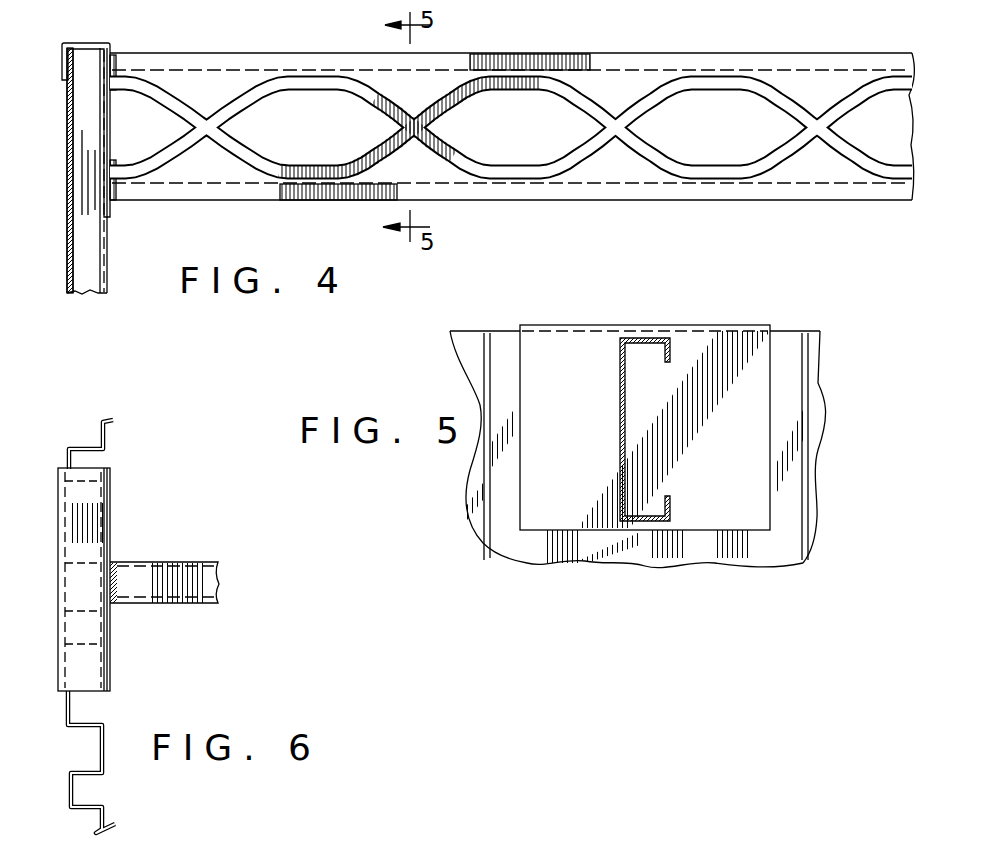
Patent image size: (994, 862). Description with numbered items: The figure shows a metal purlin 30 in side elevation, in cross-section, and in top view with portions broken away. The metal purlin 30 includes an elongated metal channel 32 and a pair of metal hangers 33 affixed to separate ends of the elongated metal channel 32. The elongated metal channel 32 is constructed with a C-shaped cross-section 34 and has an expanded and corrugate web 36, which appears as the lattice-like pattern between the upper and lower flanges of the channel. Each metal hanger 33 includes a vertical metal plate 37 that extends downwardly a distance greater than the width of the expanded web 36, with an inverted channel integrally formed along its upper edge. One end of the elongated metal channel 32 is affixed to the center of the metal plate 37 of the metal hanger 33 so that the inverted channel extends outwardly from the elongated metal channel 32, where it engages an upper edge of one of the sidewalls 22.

In FIG. 4, the sidewall 22 is at (67, 172).
In FIG. 5, the sidewall 22 is at (787, 345).
In FIG. 6, the sidewall 22 is at (68, 446).
In FIG. 4, the metal purlin 30 is at (512, 132).
In FIG. 4, the elongated metal channel 32 is at (207, 195).
In FIG. 6, the elongated metal channel 32 is at (150, 577).
In FIG. 4, the metal hanger 33 is at (88, 42).
In FIG. 6, the metal hanger 33 is at (110, 468).
In FIG. 5, the C-shaped cross-section 34 is at (612, 337).
In FIG. 4, the expanded and corrugate web 36 is at (280, 83).
In FIG. 5, the vertical metal plate 37 is at (723, 334).